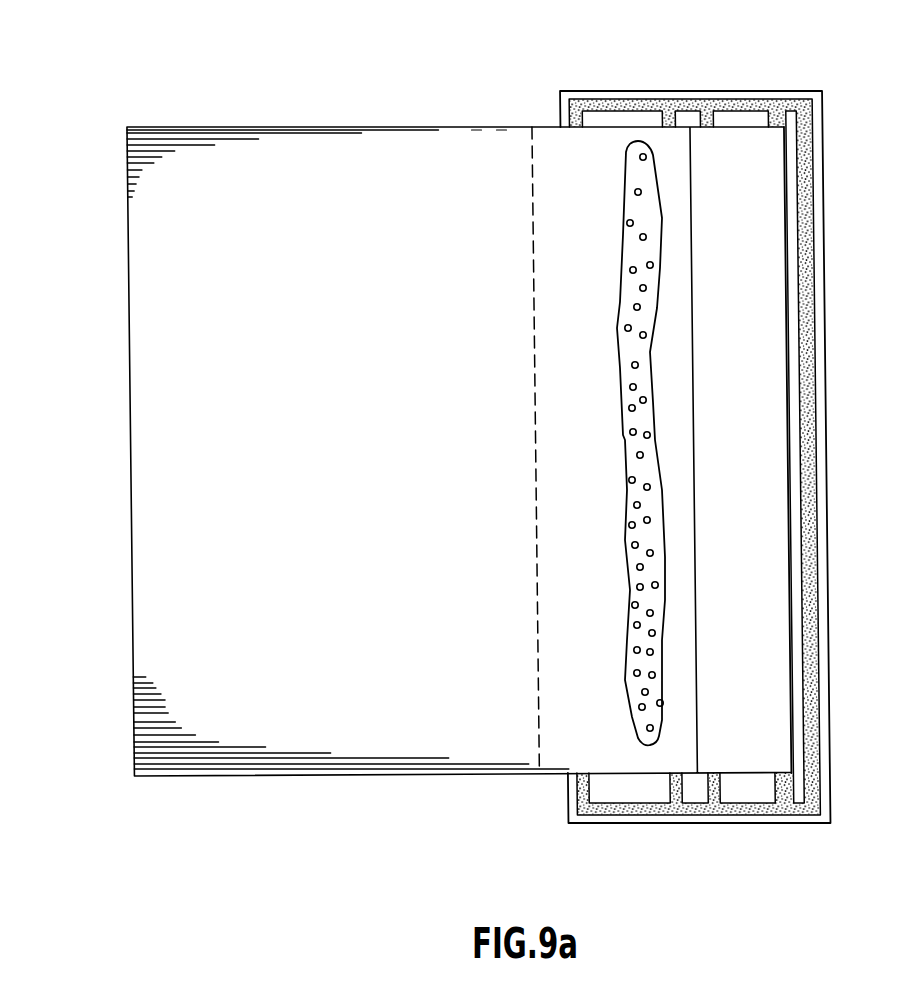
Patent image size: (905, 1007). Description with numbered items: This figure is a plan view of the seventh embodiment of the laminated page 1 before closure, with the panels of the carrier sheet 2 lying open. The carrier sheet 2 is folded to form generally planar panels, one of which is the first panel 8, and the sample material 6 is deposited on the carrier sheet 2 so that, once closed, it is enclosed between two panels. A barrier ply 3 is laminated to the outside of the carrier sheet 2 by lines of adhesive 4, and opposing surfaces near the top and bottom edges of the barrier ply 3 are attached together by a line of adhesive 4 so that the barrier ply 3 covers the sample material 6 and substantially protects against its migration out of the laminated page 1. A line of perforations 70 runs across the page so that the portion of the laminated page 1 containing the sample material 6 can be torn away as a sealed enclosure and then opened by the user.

The laminated page 1 is at (104, 239).
The carrier sheet 2 is at (337, 772).
The barrier ply 3 is at (670, 826).
The adhesive 4 is at (809, 740).
The sample material 6 is at (630, 180).
The first panel 8 is at (823, 75).
The line of perforations 70 is at (543, 763).